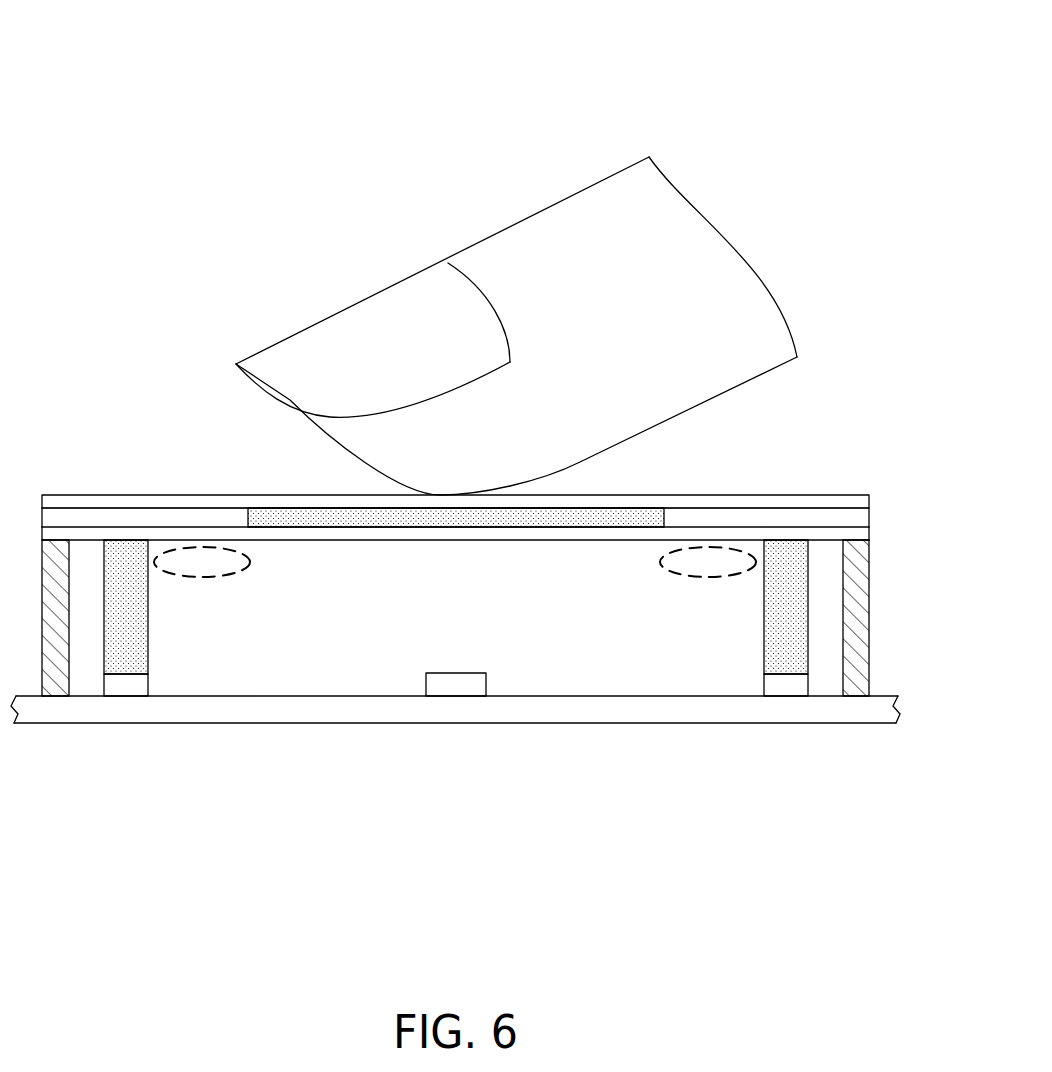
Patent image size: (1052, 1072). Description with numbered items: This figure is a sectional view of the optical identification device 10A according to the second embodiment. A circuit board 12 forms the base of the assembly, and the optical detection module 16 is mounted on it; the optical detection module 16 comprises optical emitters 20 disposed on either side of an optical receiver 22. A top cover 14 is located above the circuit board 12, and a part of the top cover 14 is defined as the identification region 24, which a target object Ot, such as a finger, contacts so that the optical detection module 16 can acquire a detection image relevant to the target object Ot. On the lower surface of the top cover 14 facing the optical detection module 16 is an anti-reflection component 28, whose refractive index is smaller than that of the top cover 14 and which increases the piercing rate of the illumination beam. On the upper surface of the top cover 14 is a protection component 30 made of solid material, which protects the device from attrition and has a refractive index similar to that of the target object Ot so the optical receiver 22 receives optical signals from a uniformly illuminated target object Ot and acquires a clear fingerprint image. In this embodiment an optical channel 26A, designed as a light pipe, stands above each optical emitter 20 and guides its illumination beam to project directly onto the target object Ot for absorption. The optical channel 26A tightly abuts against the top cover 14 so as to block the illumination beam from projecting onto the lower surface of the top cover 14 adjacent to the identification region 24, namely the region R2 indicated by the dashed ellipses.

The optical identification device 10A is at (262, 105).
The circuit board 12 is at (455, 709).
The top cover 14 is at (855, 516).
The optical detection module 16 is at (456, 686).
The optical emitter 20 is at (125, 688).
The optical receiver 22 is at (458, 690).
The identification region 24 is at (328, 520).
The optical channel 26A is at (125, 557).
The anti-reflection component 28 is at (845, 540).
The protection component 30 is at (845, 497).
The region R2 is at (202, 578).
The target object Ot is at (693, 285).